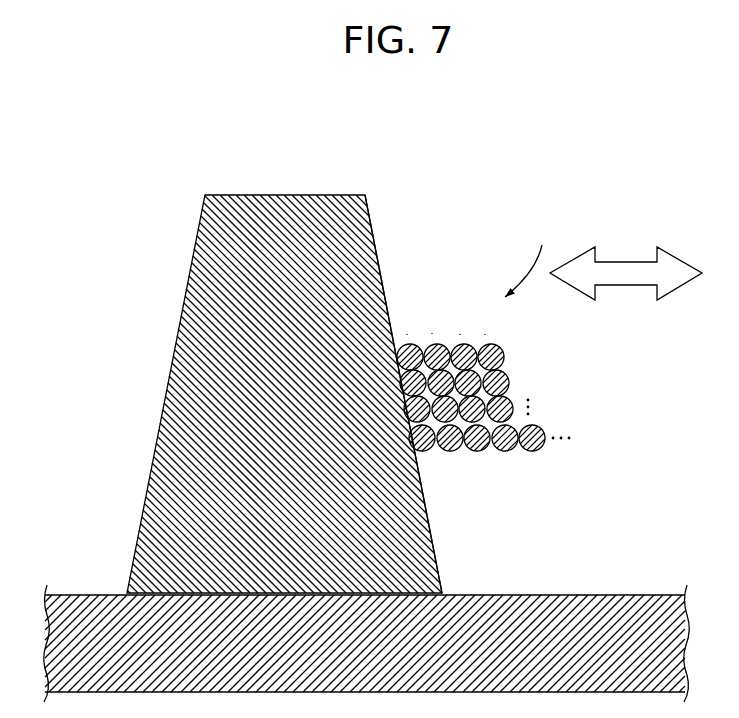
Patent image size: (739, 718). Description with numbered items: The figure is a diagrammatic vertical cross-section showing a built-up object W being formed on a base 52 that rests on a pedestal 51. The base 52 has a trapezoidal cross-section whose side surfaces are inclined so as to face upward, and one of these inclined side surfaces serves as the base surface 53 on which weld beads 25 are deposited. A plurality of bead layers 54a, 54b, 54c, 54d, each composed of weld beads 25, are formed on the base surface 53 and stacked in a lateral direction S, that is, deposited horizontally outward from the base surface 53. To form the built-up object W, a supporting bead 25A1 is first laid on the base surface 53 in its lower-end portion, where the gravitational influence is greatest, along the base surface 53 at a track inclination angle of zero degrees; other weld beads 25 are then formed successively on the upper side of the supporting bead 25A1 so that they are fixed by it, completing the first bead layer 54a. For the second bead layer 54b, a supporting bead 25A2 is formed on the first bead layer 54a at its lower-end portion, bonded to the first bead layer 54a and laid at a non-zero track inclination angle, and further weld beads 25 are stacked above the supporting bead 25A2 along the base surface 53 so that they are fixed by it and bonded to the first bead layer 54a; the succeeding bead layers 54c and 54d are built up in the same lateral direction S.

The pedestal 51 is at (82, 594).
The base 52 is at (282, 193).
The base surface 53 is at (370, 218).
The first bead layer 54a is at (407, 336).
The second bead layer 54b is at (432, 334).
The bead layer 54c is at (460, 336).
The bead layer 54d is at (485, 336).
The weld bead 25 is at (338, 446).
The supporting bead 25A1 is at (422, 452).
The supporting bead 25A2 is at (453, 452).
The built-up object W is at (530, 258).
The lateral direction S is at (626, 268).